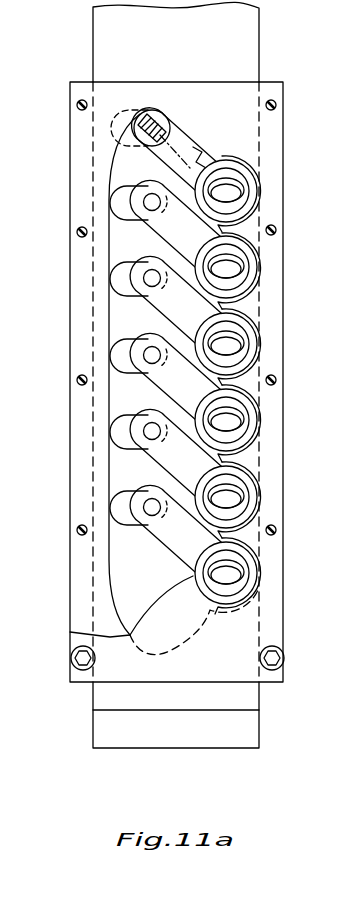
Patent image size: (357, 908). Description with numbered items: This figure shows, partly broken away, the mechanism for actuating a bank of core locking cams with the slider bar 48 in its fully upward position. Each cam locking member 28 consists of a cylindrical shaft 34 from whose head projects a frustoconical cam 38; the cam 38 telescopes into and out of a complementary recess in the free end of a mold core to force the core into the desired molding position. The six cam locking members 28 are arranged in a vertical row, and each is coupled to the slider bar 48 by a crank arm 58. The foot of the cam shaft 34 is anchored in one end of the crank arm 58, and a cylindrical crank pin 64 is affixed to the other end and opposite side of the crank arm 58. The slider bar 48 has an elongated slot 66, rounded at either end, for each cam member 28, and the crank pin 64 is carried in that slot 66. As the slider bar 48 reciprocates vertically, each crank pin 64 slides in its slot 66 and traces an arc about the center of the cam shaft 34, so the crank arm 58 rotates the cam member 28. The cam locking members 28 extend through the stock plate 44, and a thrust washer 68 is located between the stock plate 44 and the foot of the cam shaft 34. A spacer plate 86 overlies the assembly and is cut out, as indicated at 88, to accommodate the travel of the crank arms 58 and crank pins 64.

The cam locking member 28 is at (243, 163).
The cylindrical shaft 34 is at (232, 177).
The frustoconical cam 38 is at (233, 337).
The stock plate 44 is at (238, 662).
The slider bar 48 is at (262, 58).
The crank arm 58 is at (203, 150).
The crank pin 64 is at (162, 123).
The slot 66 is at (113, 193).
The thrust washer 68 is at (248, 260).
The spacer plate 86 is at (267, 140).
The cutout 88 is at (138, 122).